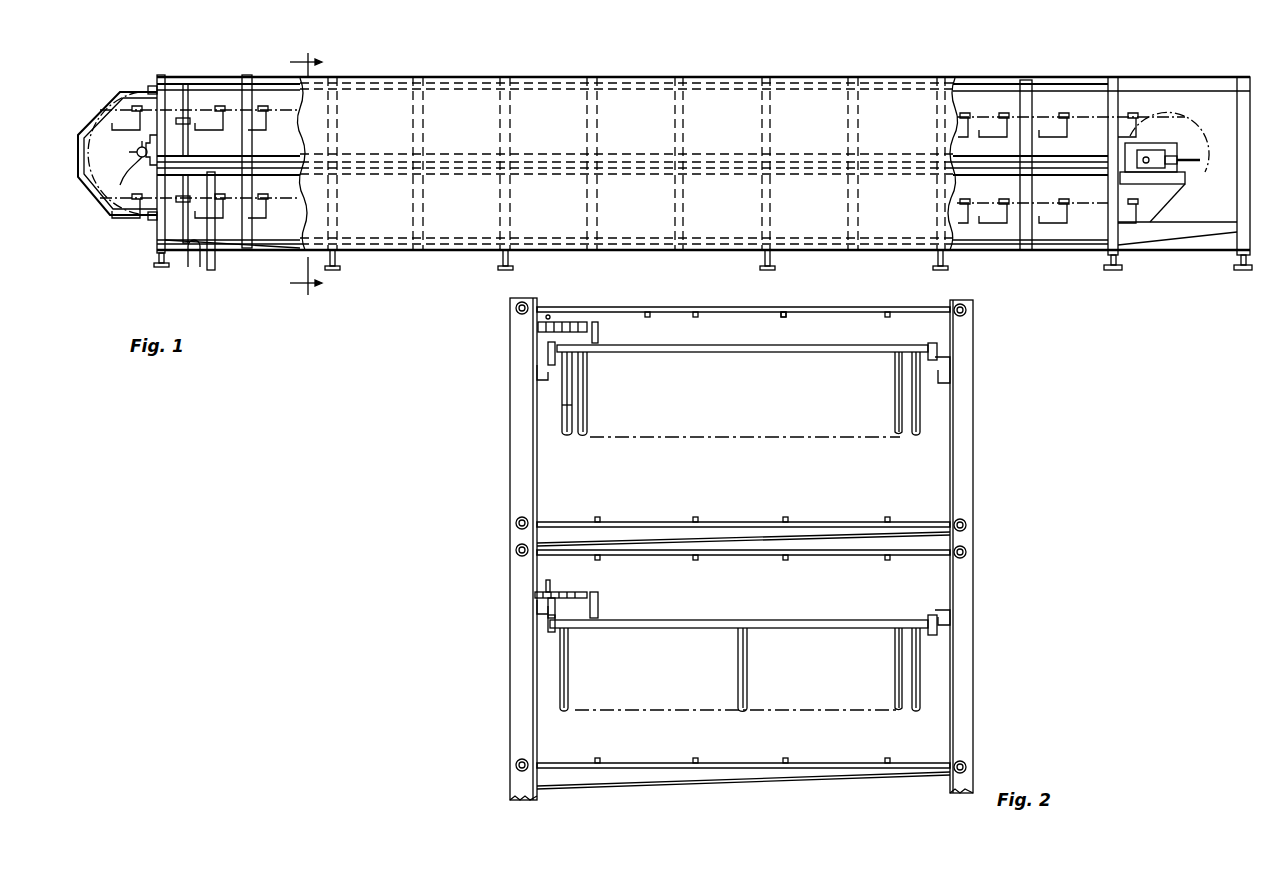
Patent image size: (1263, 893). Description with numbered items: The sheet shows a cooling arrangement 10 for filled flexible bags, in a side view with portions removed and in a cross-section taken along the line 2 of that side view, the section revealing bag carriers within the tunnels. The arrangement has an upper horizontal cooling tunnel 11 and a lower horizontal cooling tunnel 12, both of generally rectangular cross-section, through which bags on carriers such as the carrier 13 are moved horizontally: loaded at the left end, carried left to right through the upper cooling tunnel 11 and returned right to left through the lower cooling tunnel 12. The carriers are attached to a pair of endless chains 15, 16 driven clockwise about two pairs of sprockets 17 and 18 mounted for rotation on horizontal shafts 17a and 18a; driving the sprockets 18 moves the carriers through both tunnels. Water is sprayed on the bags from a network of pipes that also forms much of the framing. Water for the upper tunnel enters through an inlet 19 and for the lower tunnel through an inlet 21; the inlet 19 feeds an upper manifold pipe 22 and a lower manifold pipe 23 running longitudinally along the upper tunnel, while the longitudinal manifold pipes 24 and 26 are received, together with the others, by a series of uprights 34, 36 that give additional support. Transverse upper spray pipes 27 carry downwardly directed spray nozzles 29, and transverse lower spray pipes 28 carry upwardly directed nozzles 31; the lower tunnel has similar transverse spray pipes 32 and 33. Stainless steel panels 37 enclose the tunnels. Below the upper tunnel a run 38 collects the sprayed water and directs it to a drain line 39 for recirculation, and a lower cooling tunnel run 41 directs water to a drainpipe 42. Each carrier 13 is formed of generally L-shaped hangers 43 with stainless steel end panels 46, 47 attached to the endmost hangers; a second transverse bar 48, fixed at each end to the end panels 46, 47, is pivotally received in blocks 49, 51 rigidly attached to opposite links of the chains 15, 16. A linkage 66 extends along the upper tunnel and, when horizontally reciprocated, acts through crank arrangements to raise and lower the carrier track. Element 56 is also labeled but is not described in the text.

In FIG. 1, the cooling arrangement 10 is at (617, 74).
In FIG. 1, the upper horizontal cooling tunnel 11 is at (300, 143).
In FIG. 2, the upper horizontal cooling tunnel 11 is at (583, 477).
In FIG. 1, the lower horizontal cooling tunnel 12 is at (302, 188).
In FIG. 2, the lower horizontal cooling tunnel 12 is at (558, 733).
In FIG. 1, the carrier 13 is at (270, 100).
In FIG. 2, the carrier 13 is at (932, 401).
In FIG. 1, the endless chain 15 is at (235, 80).
In FIG. 2, the endless chain 15 is at (950, 360).
In FIG. 2, the endless chain 16 is at (548, 352).
In FIG. 1, the sprockets 17 is at (82, 112).
In FIG. 1, the horizontal shaft 17a is at (125, 163).
In FIG. 1, the sprockets 18 is at (1172, 100).
In FIG. 1, the horizontal shaft 18a is at (1149, 172).
In FIG. 1, the inlet 19 is at (188, 110).
In FIG. 1, the section line 2— 2 is at (316, 176).
In FIG. 1, the inlet 21 is at (160, 215).
In FIG. 1, the upper manifold pipe 22 is at (365, 80).
In FIG. 2, the upper manifold pipe 22 is at (968, 310).
In FIG. 1, the lower manifold pipe 23 is at (292, 154).
In FIG. 2, the lower manifold pipe 23 is at (968, 522).
In FIG. 1, the longitudinal manifold pipe 24 is at (322, 170).
In FIG. 2, the longitudinal manifold pipe 24 is at (968, 551).
In FIG. 1, the longitudinal manifold pipe 26 is at (285, 252).
In FIG. 2, the longitudinal manifold pipe 26 is at (968, 765).
In FIG. 2, the transverse upper spray pipe 27 is at (840, 310).
In FIG. 2, the transverse lower spray pipe 28 is at (745, 525).
In FIG. 2, the spray nozzles 29 is at (790, 318).
In FIG. 2, the nozzles 31 is at (700, 517).
In FIG. 2, the transverse spray pipe 32 is at (814, 560).
In FIG. 2, the transverse spray pipe 33 is at (732, 762).
In FIG. 1, the upright 34 is at (512, 204).
In FIG. 2, the upright 34 is at (512, 578).
In FIG. 1, the upright 36 is at (598, 204).
In FIG. 1, the stainless steel panels 37 is at (645, 96).
In FIG. 1, the run 38 is at (264, 185).
In FIG. 1, the drain line 39 is at (218, 262).
In FIG. 1, the lower cooling tunnel run 41 is at (207, 272).
In FIG. 1, the drainpipe 42 is at (190, 268).
In FIG. 2, the L-shaped hangers 43 is at (582, 405).
In FIG. 2, the stainless steel end panel 46 is at (562, 405).
In FIG. 2, the stainless steel end panel 47 is at (922, 425).
In FIG. 2, the second transverse bar 48 is at (672, 348).
In FIG. 2, the block 49 is at (940, 350).
In FIG. 2, the block 51 is at (550, 632).
In FIG. 2, the stop block 56 is at (600, 335).
In FIG. 2, the linkage 66 is at (560, 318).